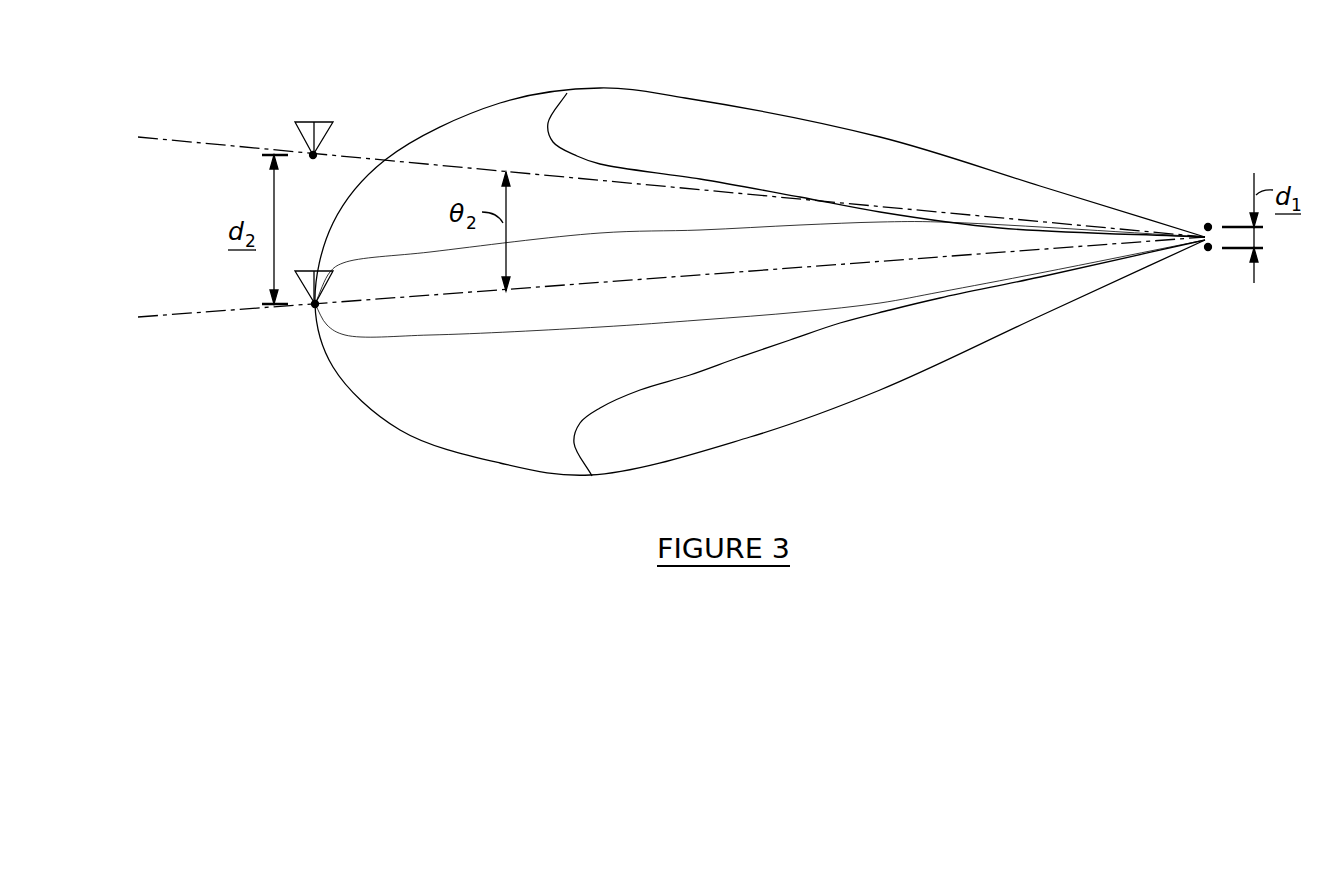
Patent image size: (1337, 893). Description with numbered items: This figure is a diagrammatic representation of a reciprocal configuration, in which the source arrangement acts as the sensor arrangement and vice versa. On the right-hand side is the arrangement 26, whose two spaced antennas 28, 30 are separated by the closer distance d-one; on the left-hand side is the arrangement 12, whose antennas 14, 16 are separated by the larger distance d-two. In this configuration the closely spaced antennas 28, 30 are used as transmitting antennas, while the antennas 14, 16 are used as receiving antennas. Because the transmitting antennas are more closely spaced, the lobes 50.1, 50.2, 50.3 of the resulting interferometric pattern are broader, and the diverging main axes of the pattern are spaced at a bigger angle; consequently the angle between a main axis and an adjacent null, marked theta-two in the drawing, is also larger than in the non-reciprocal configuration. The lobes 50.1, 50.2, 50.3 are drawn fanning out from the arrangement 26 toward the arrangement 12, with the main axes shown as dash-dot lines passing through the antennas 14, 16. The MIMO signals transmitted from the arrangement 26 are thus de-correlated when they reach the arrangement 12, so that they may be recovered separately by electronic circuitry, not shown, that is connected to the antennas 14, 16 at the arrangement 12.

The arrangement 12 is at (318, 165).
The antenna 14 is at (305, 148).
The antenna 16 is at (304, 272).
The arrangement 26 is at (1180, 203).
The spaced antenna 28 is at (1205, 227).
The spaced antenna 30 is at (1205, 252).
The lobe 50.1 is at (738, 415).
The lobe 50.2 is at (575, 313).
The lobe 50.3 is at (667, 127).